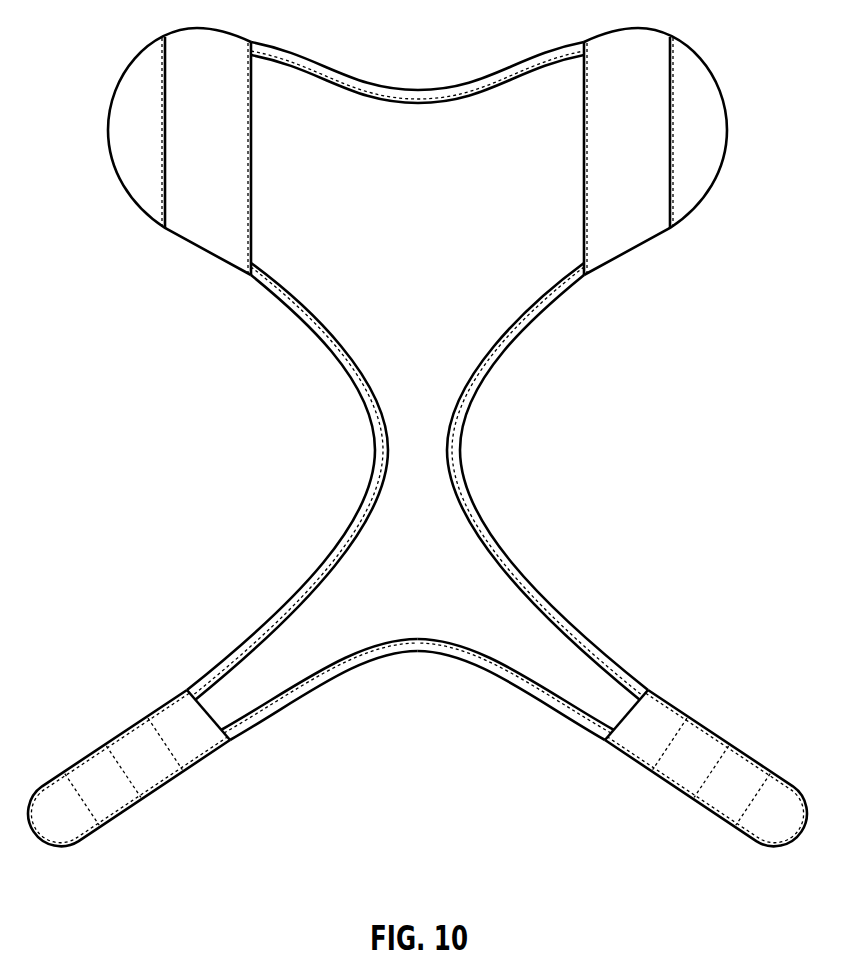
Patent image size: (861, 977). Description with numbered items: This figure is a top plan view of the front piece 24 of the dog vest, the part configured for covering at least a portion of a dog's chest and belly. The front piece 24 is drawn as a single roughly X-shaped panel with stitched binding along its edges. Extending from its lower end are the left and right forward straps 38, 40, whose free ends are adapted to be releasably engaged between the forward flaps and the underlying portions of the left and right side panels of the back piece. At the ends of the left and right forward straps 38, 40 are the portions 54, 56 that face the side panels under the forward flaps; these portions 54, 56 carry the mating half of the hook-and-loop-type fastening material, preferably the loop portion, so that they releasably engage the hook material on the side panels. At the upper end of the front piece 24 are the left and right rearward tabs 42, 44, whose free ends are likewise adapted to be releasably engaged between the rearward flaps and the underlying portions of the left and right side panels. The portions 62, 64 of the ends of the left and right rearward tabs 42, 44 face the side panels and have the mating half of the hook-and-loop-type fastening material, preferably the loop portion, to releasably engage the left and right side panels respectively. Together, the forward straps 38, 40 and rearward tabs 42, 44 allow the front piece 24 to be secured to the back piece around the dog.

The front piece 24 is at (470, 453).
The left forward strap 38 is at (233, 705).
The right forward strap 40 is at (597, 704).
The left rearward tab 42 is at (242, 165).
The right rearward tab 44 is at (593, 165).
The portion of the end of the left forward strap 54 is at (92, 772).
The portion of the end of the right forward strap 56 is at (738, 772).
The portion of the end of the left rearward tab 62 is at (132, 63).
The portion of the end of the right rearward tab 64 is at (707, 62).